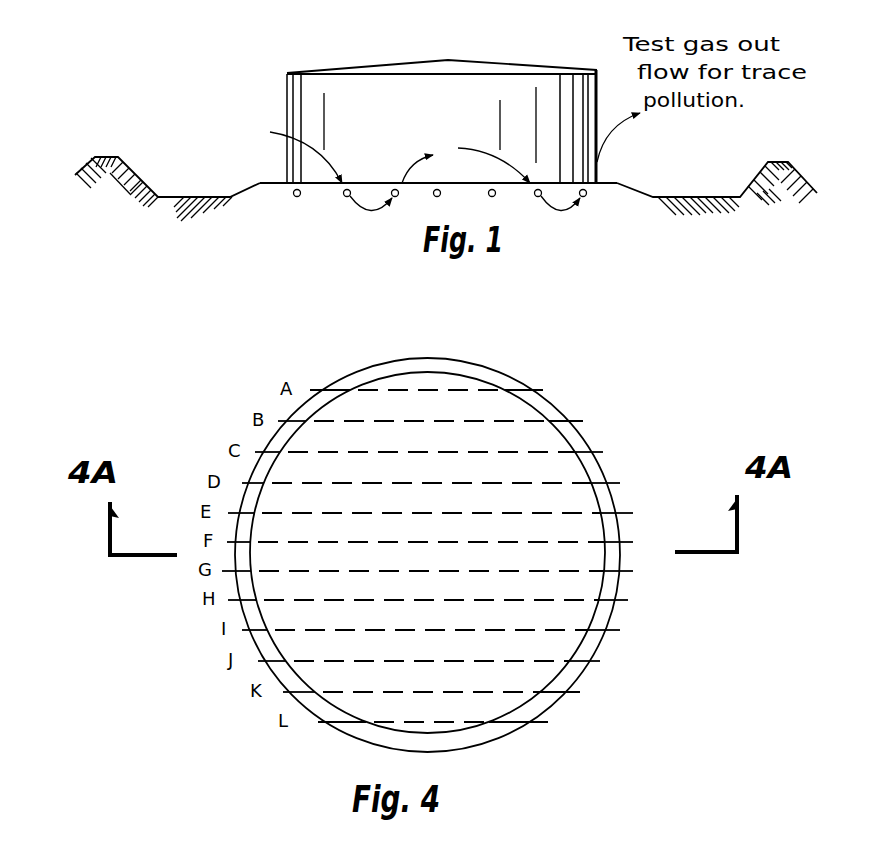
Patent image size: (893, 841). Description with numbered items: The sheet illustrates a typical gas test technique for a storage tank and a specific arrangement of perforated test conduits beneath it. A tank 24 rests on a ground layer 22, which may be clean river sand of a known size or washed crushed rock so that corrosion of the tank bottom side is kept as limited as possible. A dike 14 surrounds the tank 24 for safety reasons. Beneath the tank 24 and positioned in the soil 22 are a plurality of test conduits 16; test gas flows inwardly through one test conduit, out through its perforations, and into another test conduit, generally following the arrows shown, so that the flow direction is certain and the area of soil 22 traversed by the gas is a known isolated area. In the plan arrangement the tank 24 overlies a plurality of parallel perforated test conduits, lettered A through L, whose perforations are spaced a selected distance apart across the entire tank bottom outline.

In FIG. 1, the dike 14 is at (97, 157).
In FIG. 1, the test conduits 16 is at (296, 197).
In FIG. 1, the ground layer 22 is at (633, 193).
In FIG. 1, the tank 24 is at (480, 60).
In FIG. 4, the tank 24 is at (508, 733).